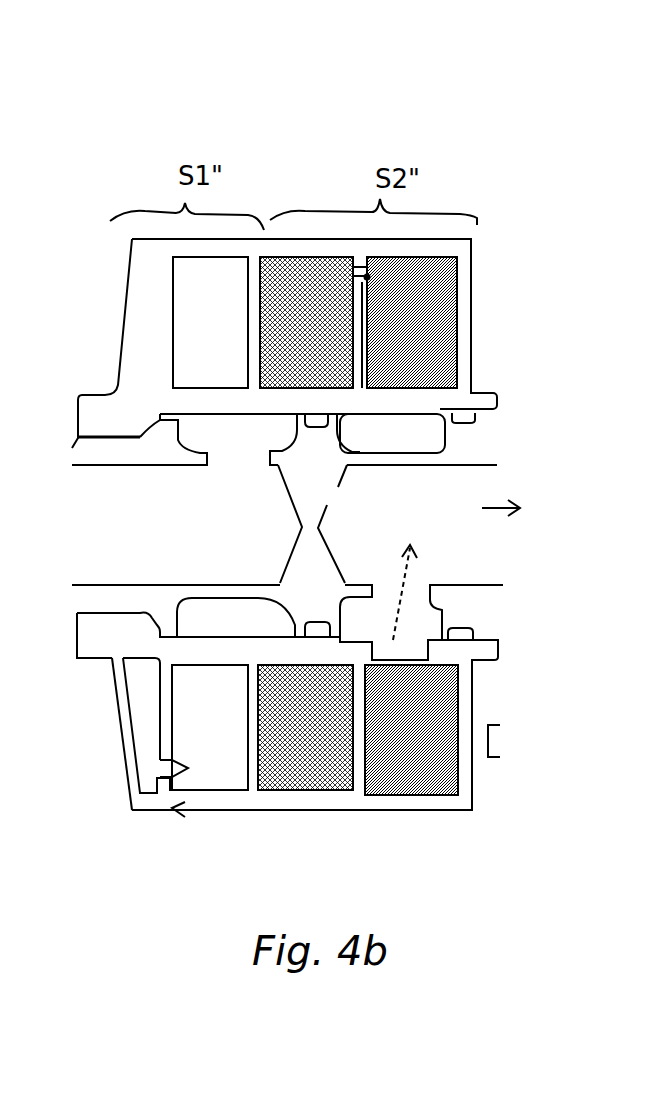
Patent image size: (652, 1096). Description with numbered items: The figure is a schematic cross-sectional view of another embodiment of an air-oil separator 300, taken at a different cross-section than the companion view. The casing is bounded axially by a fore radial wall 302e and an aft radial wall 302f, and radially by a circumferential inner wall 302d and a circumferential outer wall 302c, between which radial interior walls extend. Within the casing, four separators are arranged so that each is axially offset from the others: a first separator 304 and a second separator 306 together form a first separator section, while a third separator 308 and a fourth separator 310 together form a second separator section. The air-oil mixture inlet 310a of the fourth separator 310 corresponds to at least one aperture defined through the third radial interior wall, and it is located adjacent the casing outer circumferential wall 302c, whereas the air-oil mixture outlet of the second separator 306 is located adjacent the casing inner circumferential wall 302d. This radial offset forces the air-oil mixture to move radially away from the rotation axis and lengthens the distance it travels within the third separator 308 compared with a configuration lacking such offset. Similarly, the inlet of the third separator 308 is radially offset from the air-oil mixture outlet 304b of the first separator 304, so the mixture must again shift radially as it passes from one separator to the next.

The air-oil separator 300 is at (608, 152).
The circumferential outer wall 302c is at (398, 805).
The circumferential inner wall 302d is at (100, 635).
The fore radial wall 302e is at (132, 307).
The aft radial wall 302f is at (470, 316).
The first separator 304 is at (140, 715).
The air-oil mixture outlet 304b is at (162, 778).
The second separator 306 is at (228, 729).
The third separator 308 is at (318, 723).
The fourth separator 310 is at (428, 732).
The air-oil mixture inlet 310a is at (370, 278).